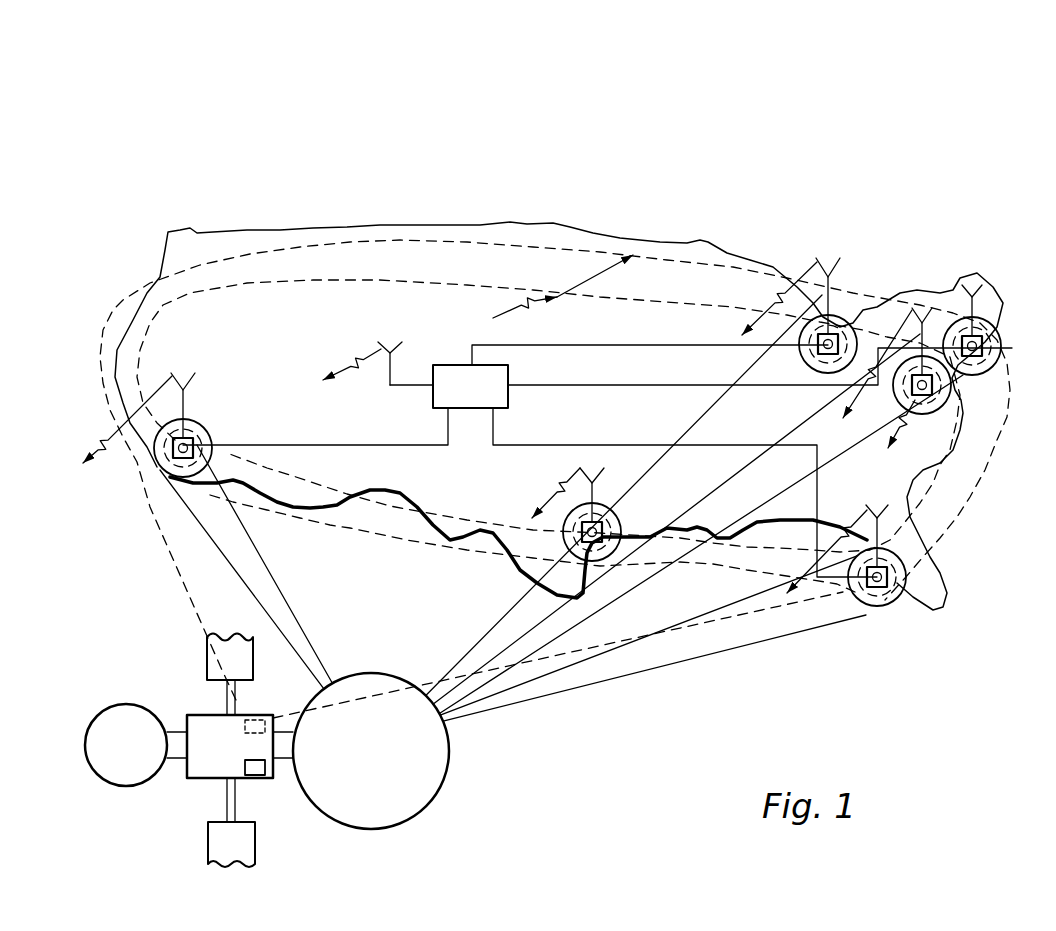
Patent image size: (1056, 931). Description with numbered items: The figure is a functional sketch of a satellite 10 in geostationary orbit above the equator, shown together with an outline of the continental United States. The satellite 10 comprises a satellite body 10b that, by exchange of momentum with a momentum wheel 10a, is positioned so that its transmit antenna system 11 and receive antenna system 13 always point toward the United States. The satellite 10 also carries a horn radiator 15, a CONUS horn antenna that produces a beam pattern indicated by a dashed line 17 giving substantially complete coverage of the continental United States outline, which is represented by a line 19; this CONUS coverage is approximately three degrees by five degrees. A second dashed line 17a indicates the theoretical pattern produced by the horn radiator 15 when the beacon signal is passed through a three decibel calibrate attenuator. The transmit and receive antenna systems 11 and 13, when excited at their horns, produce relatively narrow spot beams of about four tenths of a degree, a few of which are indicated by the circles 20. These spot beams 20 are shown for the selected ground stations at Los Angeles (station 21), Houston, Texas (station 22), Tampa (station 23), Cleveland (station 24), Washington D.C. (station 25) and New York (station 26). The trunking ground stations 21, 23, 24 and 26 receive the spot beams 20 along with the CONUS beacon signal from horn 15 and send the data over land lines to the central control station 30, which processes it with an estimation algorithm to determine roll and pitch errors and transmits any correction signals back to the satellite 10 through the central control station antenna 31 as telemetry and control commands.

The satellite 10 is at (197, 707).
The momentum wheel 10a is at (260, 777).
The satellite body 10b is at (190, 772).
The transmit antenna system 11 is at (382, 773).
The receive antenna system 13 is at (135, 756).
The horn radiator 15 is at (263, 720).
The CONUS beam pattern 17 is at (558, 247).
The calibrate beam pattern 17a is at (518, 287).
The continental United States outline 19 is at (713, 243).
The spot beams 20 is at (212, 430).
The Los Angeles ground station 21 is at (187, 430).
The Houston ground station 22 is at (610, 514).
The Tampa ground station 23 is at (875, 605).
The Cleveland ground station 24 is at (808, 364).
The Washington D.C. ground station 25 is at (893, 396).
The New York ground station 26 is at (991, 346).
The central control station 30 is at (448, 365).
The central control station antenna 31 is at (388, 368).